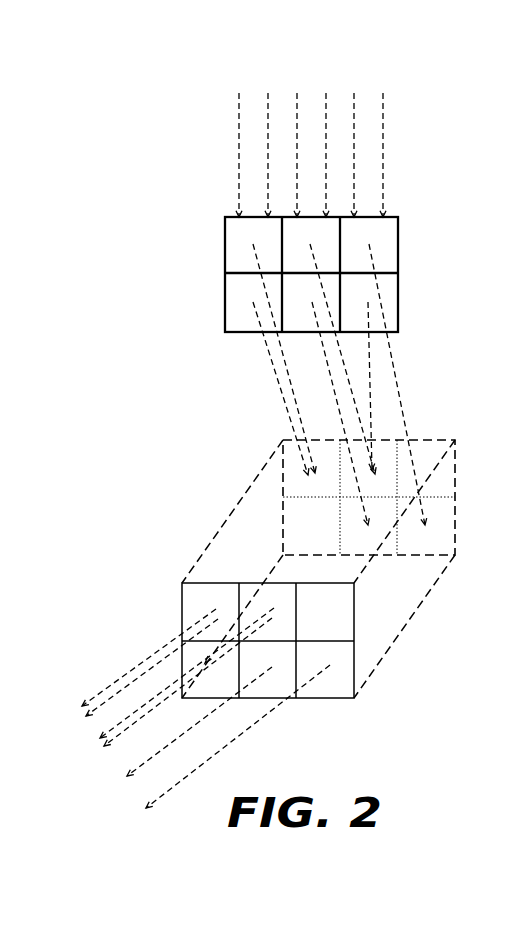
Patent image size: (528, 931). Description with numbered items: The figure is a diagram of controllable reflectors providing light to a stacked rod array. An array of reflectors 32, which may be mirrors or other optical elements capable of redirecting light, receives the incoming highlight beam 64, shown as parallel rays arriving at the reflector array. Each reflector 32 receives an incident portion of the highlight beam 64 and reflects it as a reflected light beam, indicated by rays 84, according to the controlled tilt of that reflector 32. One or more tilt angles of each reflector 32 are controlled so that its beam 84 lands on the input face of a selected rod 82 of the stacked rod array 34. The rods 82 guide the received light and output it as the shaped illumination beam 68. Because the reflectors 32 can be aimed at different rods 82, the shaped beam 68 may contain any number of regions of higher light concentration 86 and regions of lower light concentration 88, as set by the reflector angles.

The reflector 32 is at (388, 243).
The highlight beam 64 is at (321, 149).
The reflected light beam rays 84 is at (397, 381).
The stacked rod array 34 is at (462, 440).
The rod 82 is at (447, 567).
The shaped illumination beam 68 is at (173, 731).
The region of higher light concentration 86 is at (136, 646).
The region of lower light concentration 88 is at (248, 740).